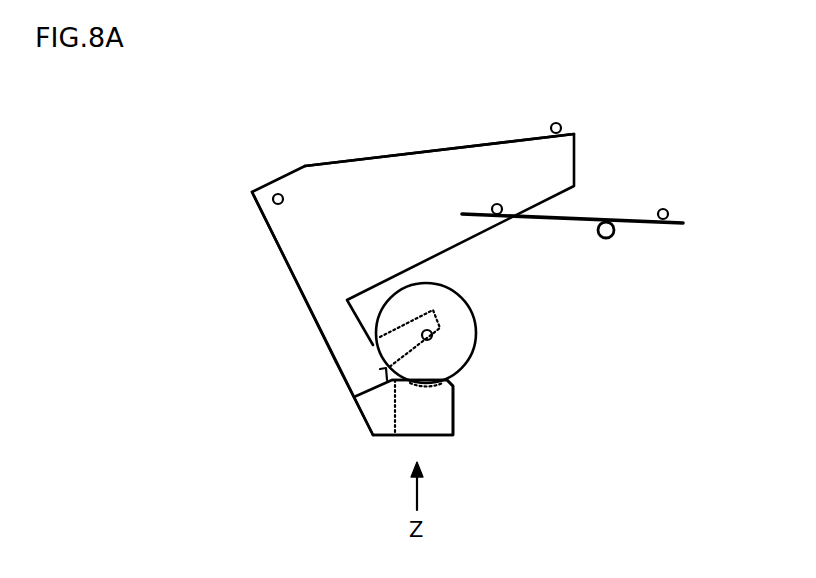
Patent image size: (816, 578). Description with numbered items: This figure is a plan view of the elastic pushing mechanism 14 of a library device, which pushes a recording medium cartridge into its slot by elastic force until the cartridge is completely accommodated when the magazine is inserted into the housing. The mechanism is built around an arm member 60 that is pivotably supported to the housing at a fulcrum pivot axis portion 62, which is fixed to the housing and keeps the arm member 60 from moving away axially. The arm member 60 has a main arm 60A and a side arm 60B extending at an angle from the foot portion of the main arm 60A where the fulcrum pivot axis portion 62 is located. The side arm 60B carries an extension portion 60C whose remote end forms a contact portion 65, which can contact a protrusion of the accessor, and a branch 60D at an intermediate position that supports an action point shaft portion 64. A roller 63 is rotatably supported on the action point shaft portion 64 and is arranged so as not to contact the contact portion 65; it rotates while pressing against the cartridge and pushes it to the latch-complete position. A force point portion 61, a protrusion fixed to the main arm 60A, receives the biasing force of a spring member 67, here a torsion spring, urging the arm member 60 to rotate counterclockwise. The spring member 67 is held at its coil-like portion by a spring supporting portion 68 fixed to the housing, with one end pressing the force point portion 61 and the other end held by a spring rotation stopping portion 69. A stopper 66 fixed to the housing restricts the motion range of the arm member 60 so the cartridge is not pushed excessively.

The elastic pushing mechanism 14 is at (654, 139).
The arm member 60 is at (304, 268).
The main arm 60A is at (385, 155).
The side arm 60B is at (334, 362).
The extension portion 60C is at (360, 418).
The branch 60D is at (434, 309).
The force point portion 61 is at (497, 204).
The fulcrum pivot axis portion 62 is at (278, 194).
The roller 63 is at (460, 320).
The action point shaft portion 64 is at (432, 336).
The contact portion 65 is at (443, 410).
The stopper 66 is at (558, 123).
The spring member 67 is at (583, 218).
The spring supporting portion 68 is at (606, 239).
The spring rotation stopping portion 69 is at (663, 209).